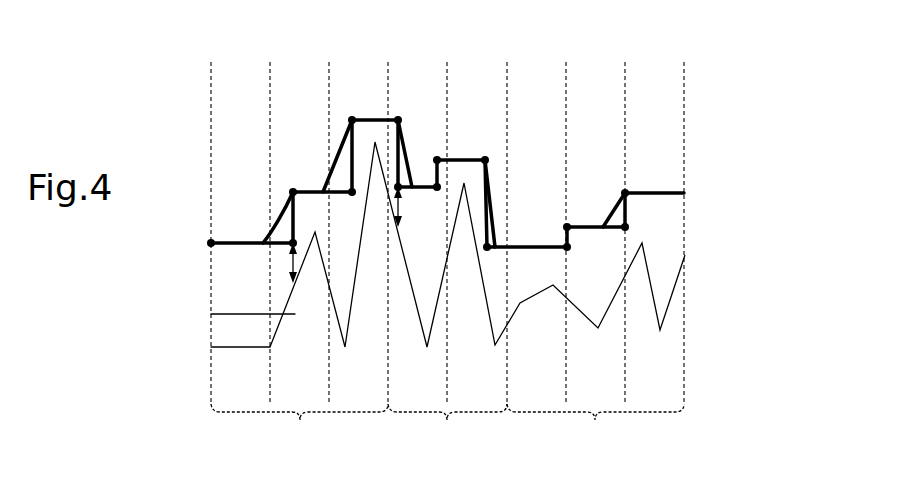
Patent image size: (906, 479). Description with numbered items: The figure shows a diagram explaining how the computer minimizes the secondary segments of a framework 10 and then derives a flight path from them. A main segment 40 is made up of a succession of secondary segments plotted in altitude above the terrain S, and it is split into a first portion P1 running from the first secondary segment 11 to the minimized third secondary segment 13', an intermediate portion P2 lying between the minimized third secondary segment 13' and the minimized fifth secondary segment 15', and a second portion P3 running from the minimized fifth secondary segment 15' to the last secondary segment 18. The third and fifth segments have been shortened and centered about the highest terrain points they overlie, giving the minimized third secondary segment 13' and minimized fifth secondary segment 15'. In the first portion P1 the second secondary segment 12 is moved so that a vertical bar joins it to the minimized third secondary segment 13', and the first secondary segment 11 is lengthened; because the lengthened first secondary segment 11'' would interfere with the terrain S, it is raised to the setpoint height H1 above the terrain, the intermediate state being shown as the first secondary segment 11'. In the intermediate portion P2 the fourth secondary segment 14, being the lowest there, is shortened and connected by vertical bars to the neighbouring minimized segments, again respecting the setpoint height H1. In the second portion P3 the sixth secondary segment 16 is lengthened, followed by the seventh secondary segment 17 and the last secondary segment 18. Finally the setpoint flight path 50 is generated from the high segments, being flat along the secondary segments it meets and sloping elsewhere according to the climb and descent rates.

The main segment 40 is at (170, 124).
The framework 10 is at (284, 217).
The first secondary segment 11 is at (216, 335).
The first secondary segment 11' is at (224, 226).
The lengthened first secondary segment 11'' is at (225, 295).
The second secondary segment 12 is at (315, 191).
The minimized third secondary segment 13' is at (367, 126).
The fourth secondary segment 14 is at (410, 185).
The minimized fifth secondary segment 15' is at (469, 171).
The setpoint flight path 50 is at (491, 177).
The sixth secondary segment 16 is at (525, 246).
The seventh secondary segment 17 is at (605, 226).
The last secondary segment 18 is at (668, 192).
The setpoint height H1 is at (346, 235).
The terrain S is at (550, 375).
The first portion P1 is at (299, 428).
The intermediate portion P2 is at (447, 428).
The second portion P3 is at (595, 428).